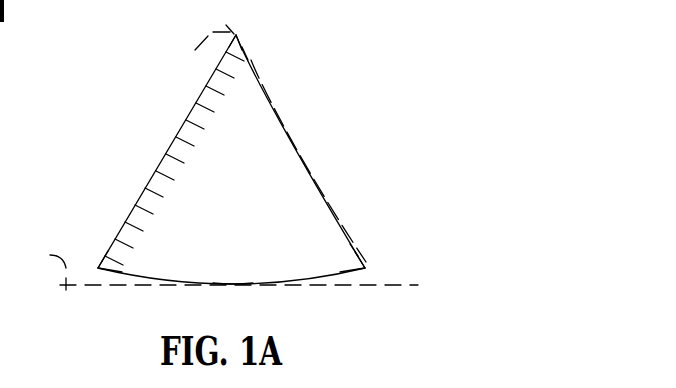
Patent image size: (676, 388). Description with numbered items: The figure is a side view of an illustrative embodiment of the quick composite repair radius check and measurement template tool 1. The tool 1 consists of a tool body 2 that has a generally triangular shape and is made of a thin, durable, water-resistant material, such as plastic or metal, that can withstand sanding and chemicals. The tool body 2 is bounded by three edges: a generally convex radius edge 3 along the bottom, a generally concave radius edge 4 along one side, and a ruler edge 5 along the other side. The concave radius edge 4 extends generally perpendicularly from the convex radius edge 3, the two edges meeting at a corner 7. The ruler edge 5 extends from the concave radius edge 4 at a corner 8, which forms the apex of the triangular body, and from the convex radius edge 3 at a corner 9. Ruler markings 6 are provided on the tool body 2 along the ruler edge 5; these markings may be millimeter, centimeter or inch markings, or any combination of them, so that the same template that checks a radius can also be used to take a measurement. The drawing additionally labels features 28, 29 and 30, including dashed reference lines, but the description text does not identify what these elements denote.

The quick composite repair template tool 1 is at (150, 97).
The tool body 2 is at (333, 200).
The convex radius edge 3 is at (133, 278).
The concave radius edge 4 is at (284, 131).
The ruler edge 5 is at (172, 143).
The ruler markings 6 is at (215, 105).
The corner 7 is at (367, 268).
The corner 8 is at (239, 33).
The corner 9 is at (98, 268).
The reference datum line 28 is at (185, 52).
The arcuate bottom edge 29 is at (233, 284).
The transition portion 30 is at (243, 55).